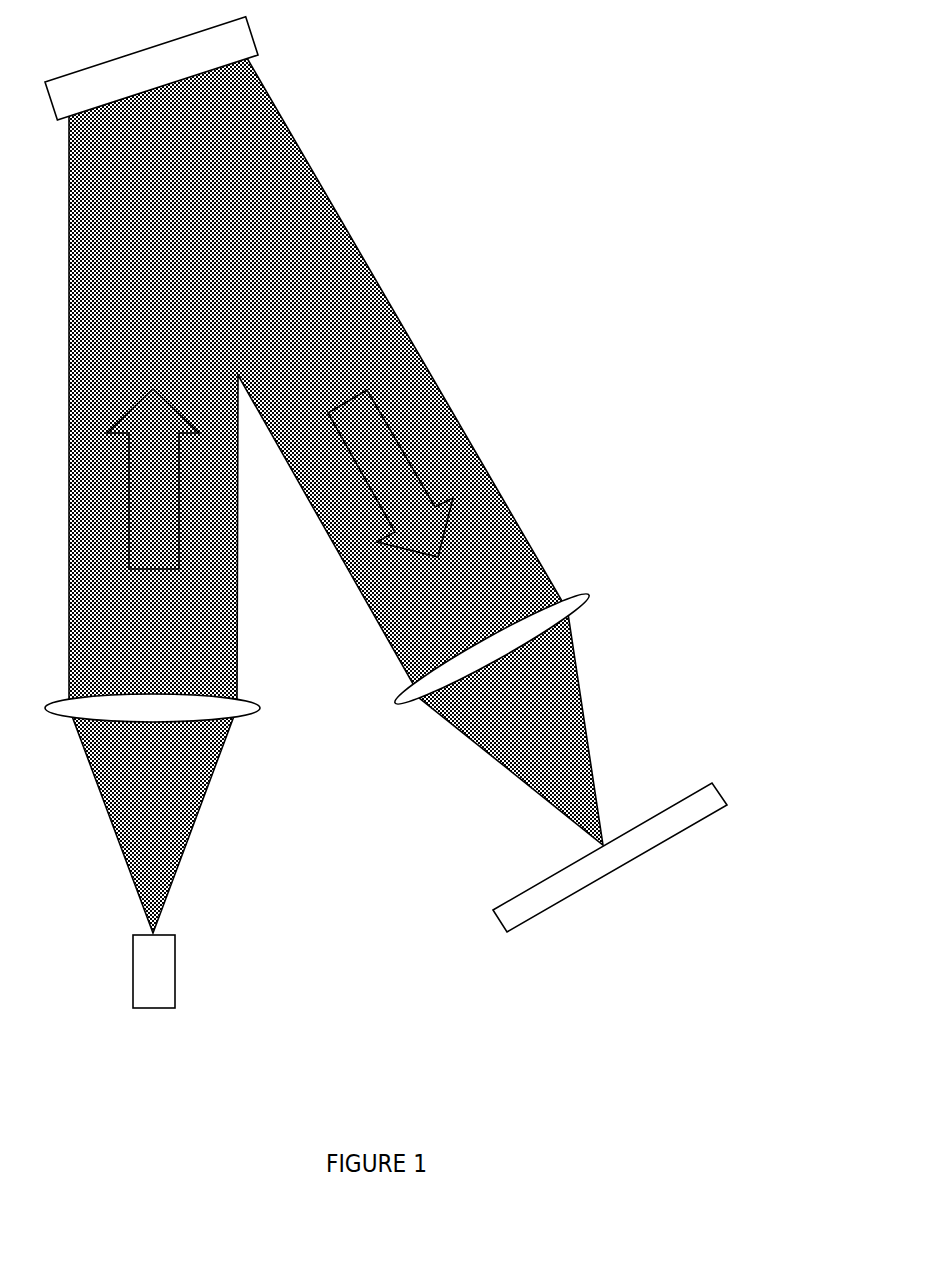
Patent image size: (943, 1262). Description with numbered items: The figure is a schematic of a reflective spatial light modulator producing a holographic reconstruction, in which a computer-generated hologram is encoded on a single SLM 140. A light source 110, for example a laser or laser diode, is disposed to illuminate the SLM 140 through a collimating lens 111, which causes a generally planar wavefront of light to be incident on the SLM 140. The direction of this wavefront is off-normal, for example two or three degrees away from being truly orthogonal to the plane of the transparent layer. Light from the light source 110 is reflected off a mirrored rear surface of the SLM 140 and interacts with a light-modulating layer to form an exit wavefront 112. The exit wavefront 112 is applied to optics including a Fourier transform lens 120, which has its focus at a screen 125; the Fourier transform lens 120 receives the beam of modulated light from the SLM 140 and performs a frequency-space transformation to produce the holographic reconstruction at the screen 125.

The light source 110 is at (175, 972).
The collimating lens 111 is at (259, 712).
The exit wavefront 112 is at (397, 472).
The Fourier transform lens 120 is at (573, 592).
The screen 125 is at (555, 903).
The spatial light modulator (SLM) 140 is at (256, 45).